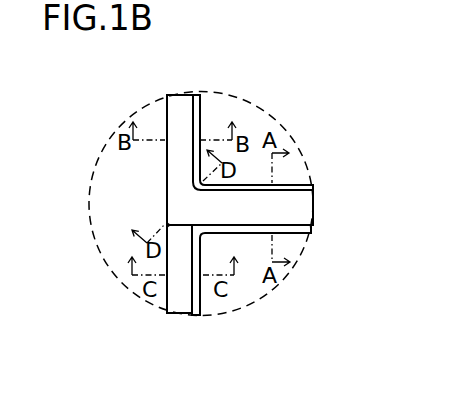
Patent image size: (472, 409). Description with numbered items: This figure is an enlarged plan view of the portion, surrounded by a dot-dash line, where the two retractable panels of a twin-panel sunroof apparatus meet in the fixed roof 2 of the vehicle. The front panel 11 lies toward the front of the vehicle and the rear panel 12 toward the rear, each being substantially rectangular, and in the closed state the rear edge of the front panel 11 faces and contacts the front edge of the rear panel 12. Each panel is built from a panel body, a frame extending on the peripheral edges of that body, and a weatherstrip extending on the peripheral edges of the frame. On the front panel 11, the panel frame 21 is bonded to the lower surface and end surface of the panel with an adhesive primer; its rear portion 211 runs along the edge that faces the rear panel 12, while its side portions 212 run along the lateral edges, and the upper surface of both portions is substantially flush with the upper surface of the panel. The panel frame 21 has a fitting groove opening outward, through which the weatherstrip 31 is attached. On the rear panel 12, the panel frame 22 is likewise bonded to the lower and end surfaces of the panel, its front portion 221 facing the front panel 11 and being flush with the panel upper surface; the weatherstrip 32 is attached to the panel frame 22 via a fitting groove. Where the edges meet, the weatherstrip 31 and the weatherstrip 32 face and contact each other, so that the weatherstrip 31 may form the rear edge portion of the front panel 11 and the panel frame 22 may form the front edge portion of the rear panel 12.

The fixed roof 2 is at (122, 186).
The front panel 11 is at (255, 114).
The rear panel 12 is at (242, 287).
The panel frame 21 is at (289, 183).
The rear portion 211 is at (300, 184).
The side portions 212 is at (192, 106).
The panel frame 22 is at (303, 233).
The front portion 221 is at (308, 238).
The weatherstrip 31 is at (302, 207).
The weatherstrip 32 is at (181, 296).